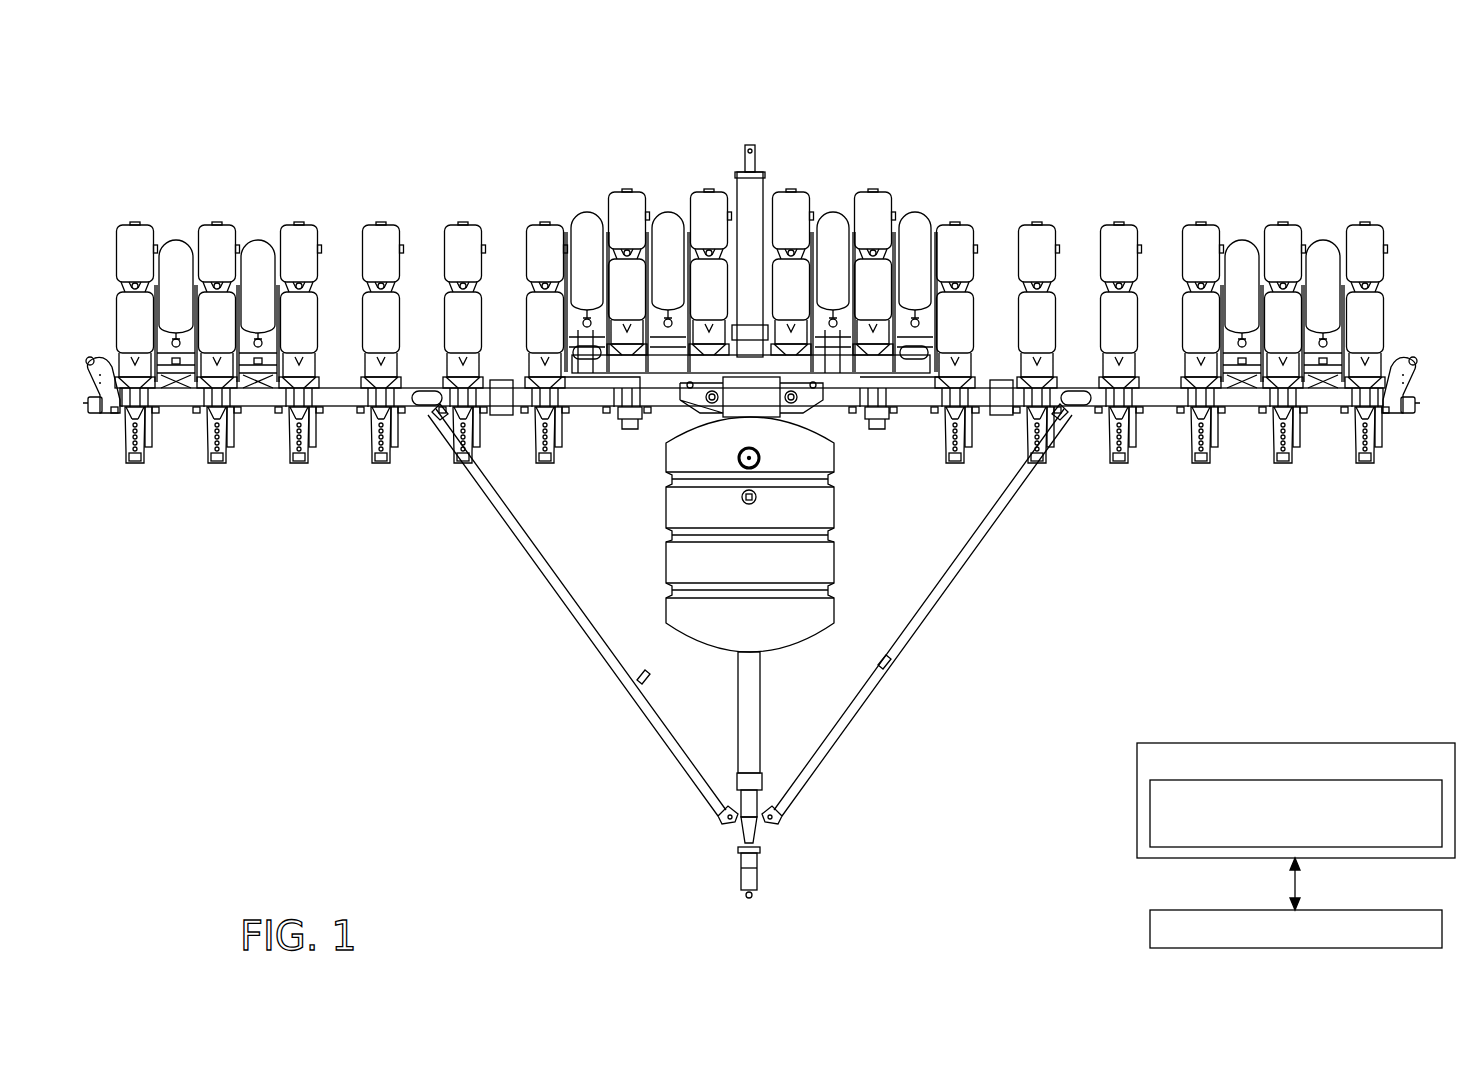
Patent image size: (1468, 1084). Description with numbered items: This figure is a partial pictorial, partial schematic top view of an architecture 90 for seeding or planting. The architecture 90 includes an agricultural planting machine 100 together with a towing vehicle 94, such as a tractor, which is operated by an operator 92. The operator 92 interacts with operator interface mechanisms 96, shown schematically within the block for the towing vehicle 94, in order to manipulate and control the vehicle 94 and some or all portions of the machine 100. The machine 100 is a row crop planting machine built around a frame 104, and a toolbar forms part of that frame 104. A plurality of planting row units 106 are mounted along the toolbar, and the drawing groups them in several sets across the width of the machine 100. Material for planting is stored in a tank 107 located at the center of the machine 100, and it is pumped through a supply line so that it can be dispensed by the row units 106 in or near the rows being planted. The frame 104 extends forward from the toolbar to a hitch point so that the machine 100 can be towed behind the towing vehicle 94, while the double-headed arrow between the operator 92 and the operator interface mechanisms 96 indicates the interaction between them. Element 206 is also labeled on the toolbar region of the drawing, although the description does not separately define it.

The architecture 90 is at (751, 475).
The operator 92 is at (1296, 929).
The towing vehicle 94 is at (1296, 800).
The operator interface mechanisms 96 is at (1296, 813).
The agricultural planting machine 100 is at (769, 500).
The frame 104 is at (847, 731).
The planting row units 106 is at (294, 232).
The tank 107 is at (677, 570).
The toolbar 206 is at (1155, 408).